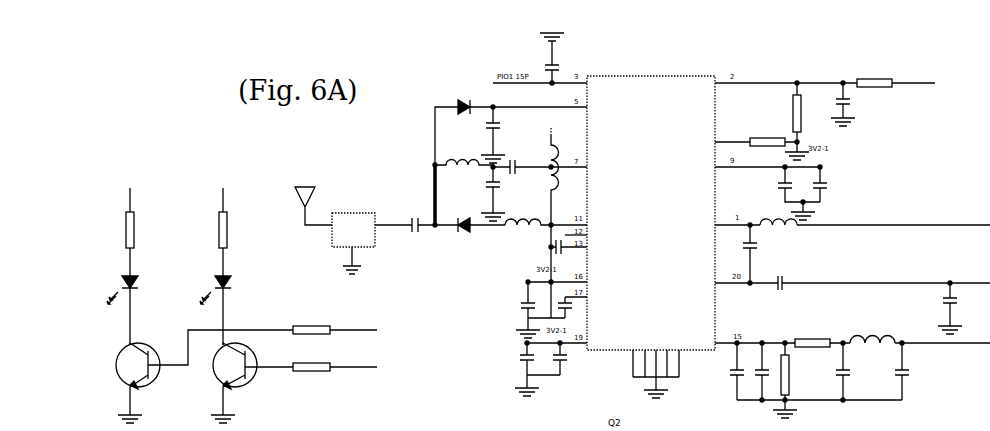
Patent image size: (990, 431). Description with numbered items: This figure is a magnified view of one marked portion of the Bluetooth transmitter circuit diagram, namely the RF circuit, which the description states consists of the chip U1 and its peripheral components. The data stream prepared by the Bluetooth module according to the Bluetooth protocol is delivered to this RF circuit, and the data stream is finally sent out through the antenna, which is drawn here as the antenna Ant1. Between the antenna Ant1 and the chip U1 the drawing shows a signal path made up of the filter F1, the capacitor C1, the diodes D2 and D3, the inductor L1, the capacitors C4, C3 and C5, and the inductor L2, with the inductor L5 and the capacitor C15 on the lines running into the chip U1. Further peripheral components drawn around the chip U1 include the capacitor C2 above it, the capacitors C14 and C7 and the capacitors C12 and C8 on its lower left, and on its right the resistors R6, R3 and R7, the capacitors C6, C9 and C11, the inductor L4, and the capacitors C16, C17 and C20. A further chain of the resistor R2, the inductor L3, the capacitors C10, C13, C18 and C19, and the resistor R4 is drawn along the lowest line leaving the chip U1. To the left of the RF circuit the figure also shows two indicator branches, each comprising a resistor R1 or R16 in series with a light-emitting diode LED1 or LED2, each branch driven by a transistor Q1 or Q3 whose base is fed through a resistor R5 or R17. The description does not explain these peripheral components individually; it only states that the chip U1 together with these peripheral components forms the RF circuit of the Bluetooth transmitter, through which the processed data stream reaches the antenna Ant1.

The resistor R1 is at (139, 227).
The light emitting diode LED1 is at (135, 288).
The transistor Q1 is at (204, 355).
The resistor R16 is at (232, 227).
The light emitting diode LED2 is at (229, 288).
The transistor Q3 is at (255, 355).
The resistor R5 is at (350, 324).
The resistor R17 is at (348, 368).
The antenna Ant1 is at (312, 200).
The filter F1 is at (372, 233).
The capacitor C1 is at (431, 226).
The diode D2 is at (512, 116).
The diode D3 is at (471, 229).
The inductor L1 is at (464, 166).
The capacitor C4 is at (499, 137).
The capacitor C3 is at (487, 194).
The capacitor C5 is at (540, 167).
The inductor L2 is at (560, 173).
The capacitor C2 is at (547, 58).
The RF circuit chip U1 is at (651, 237).
The inductor L5 is at (543, 229).
The capacitor C15 is at (556, 248).
The capacitor C14 is at (533, 310).
The capacitor C7 is at (571, 307).
The capacitor C12 is at (537, 369).
The capacitor C8 is at (570, 359).
The resistor R6 is at (911, 79).
The resistor R3 is at (803, 121).
The capacitor C6 is at (852, 104).
The resistor R7 is at (756, 142).
The capacitor C9 is at (799, 193).
The capacitor C11 is at (831, 184).
The inductor L4 is at (778, 225).
The capacitor C16 is at (761, 254).
The capacitor C17 is at (852, 284).
The capacitor C20 is at (956, 308).
The resistor R2 is at (815, 336).
The inductor L3 is at (872, 342).
The capacitor C10 is at (729, 371).
The capacitor C13 is at (756, 371).
The resistor R4 is at (790, 380).
The capacitor C18 is at (854, 371).
The capacitor C19 is at (913, 371).